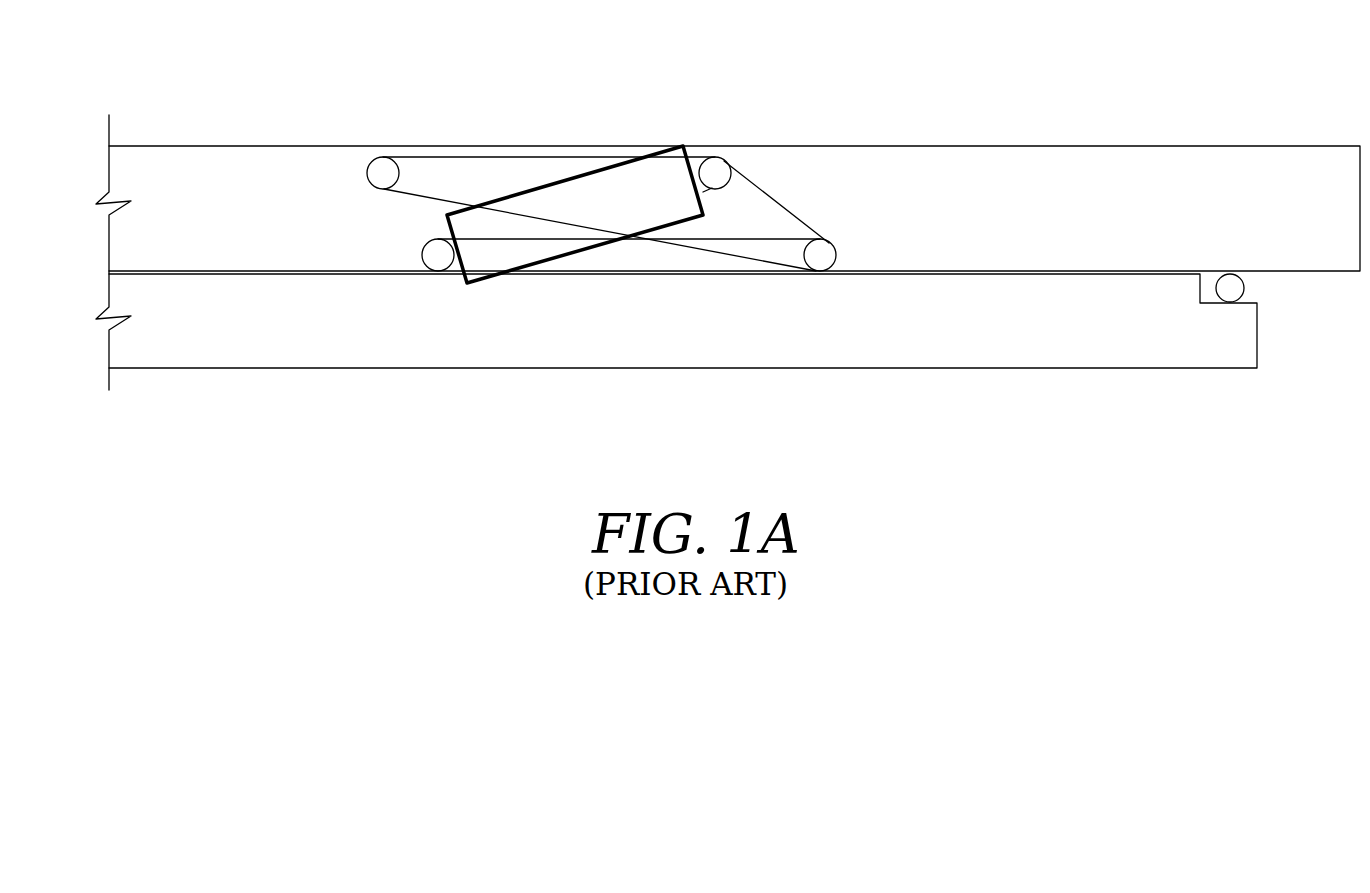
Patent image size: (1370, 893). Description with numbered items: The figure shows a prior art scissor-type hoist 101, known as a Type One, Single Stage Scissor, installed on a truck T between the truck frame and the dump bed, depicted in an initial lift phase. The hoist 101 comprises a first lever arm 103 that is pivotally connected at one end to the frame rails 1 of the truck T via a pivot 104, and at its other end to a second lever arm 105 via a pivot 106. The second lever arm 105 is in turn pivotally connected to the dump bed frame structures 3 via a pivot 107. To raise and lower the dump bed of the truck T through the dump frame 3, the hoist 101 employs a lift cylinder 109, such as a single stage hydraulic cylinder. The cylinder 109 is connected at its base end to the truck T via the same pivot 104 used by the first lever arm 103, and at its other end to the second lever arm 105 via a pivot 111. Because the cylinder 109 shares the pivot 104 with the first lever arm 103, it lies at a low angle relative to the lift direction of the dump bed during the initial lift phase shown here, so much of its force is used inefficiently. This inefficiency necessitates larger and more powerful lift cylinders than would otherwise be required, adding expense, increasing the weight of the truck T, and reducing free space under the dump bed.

The frame rails 1 is at (888, 337).
The dump bed frame structures 3 is at (918, 163).
The truck T is at (1060, 128).
The scissor-type hoist 101 is at (608, 138).
The first lever arm 103 is at (632, 252).
The pivot 104 is at (437, 255).
The second lever arm 105 is at (447, 172).
The pivot 106 is at (826, 250).
The pivot 107 is at (383, 172).
The lift cylinder 109 is at (632, 213).
The pivot 111 is at (716, 166).